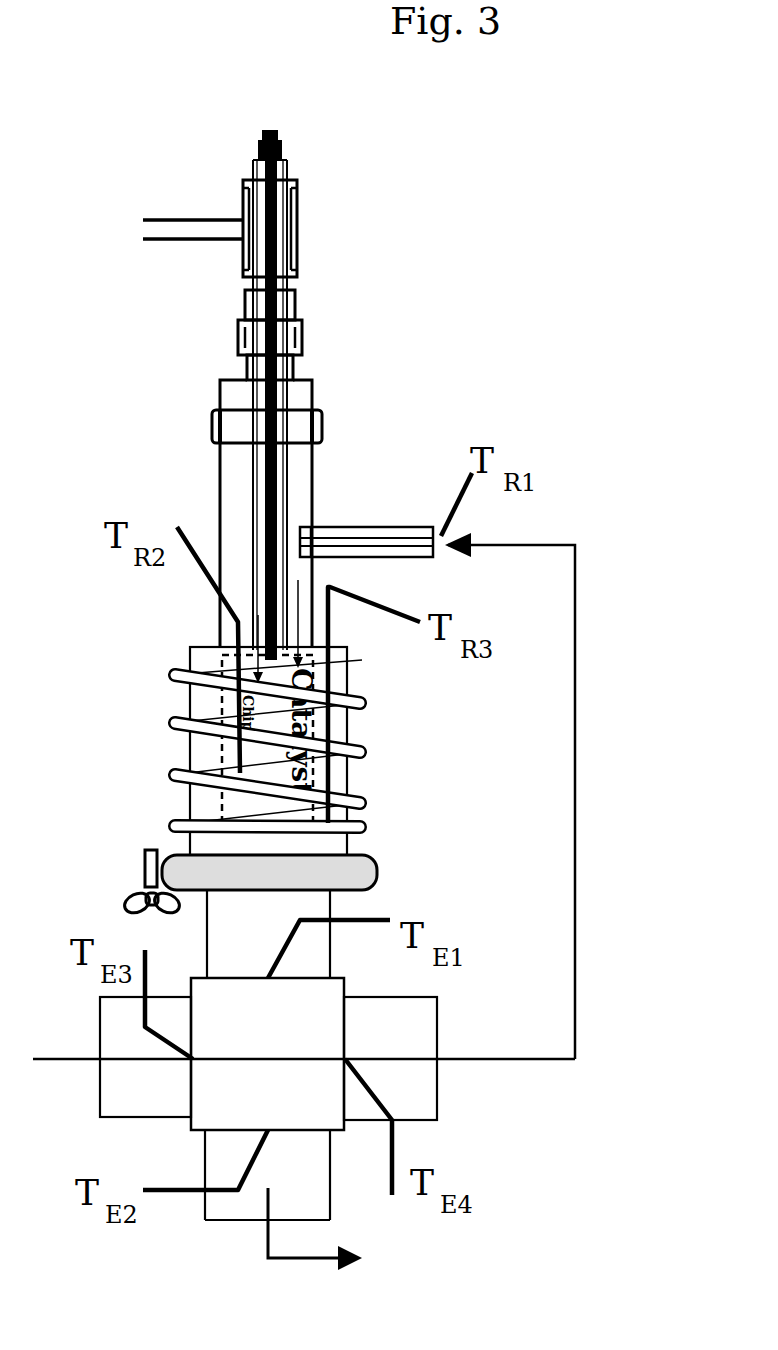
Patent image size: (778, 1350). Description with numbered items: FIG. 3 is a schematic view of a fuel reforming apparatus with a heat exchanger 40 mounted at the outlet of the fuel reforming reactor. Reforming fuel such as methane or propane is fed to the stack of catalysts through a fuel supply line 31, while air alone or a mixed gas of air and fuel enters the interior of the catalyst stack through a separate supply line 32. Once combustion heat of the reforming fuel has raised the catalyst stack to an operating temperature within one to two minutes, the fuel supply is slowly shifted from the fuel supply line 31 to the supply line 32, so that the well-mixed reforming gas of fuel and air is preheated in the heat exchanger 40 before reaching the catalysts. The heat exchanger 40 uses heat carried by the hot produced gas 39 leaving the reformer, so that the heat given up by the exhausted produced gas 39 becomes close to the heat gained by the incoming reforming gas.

The fuel supply line 31 is at (158, 221).
The supply line 32 is at (423, 553).
The produced gas 39 is at (331, 1252).
The heat exchanger 40 is at (99, 1081).